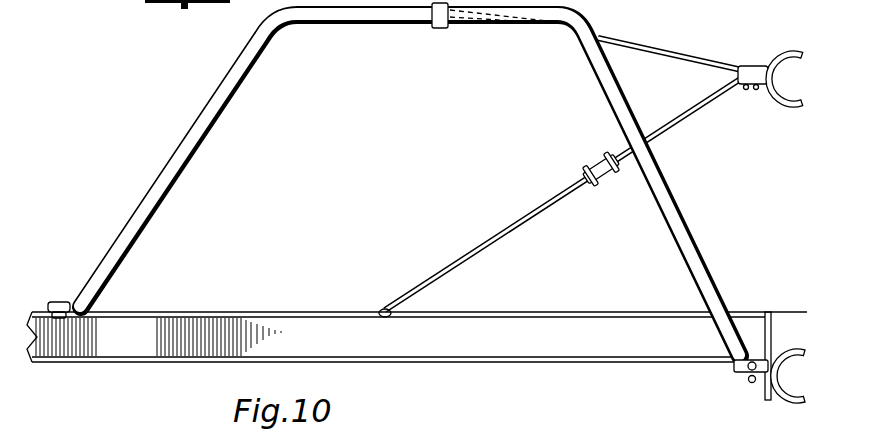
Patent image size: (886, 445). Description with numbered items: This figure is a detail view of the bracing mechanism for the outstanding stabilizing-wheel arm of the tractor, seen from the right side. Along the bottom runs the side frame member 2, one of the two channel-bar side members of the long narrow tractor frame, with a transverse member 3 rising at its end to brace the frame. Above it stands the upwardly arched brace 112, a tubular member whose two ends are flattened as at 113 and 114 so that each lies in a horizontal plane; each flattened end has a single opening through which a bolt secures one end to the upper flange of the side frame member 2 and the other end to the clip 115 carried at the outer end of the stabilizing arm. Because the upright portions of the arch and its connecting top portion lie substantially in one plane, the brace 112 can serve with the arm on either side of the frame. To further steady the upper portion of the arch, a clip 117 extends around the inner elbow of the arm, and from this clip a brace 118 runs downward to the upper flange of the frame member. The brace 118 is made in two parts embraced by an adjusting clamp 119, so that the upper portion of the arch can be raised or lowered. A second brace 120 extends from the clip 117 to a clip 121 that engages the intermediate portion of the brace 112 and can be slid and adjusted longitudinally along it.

The side frame member 2 is at (417, 337).
The transverse member 3 is at (777, 311).
The upwardly arched brace 112 is at (207, 133).
The flattened end 113 is at (60, 302).
The flattened end 114 is at (747, 376).
The clip 115 is at (788, 404).
The clip 117 is at (786, 108).
The brace 118 is at (678, 122).
The adjusting clamp 119 is at (608, 180).
The second brace 120 is at (642, 42).
The clip 121 is at (443, 28).